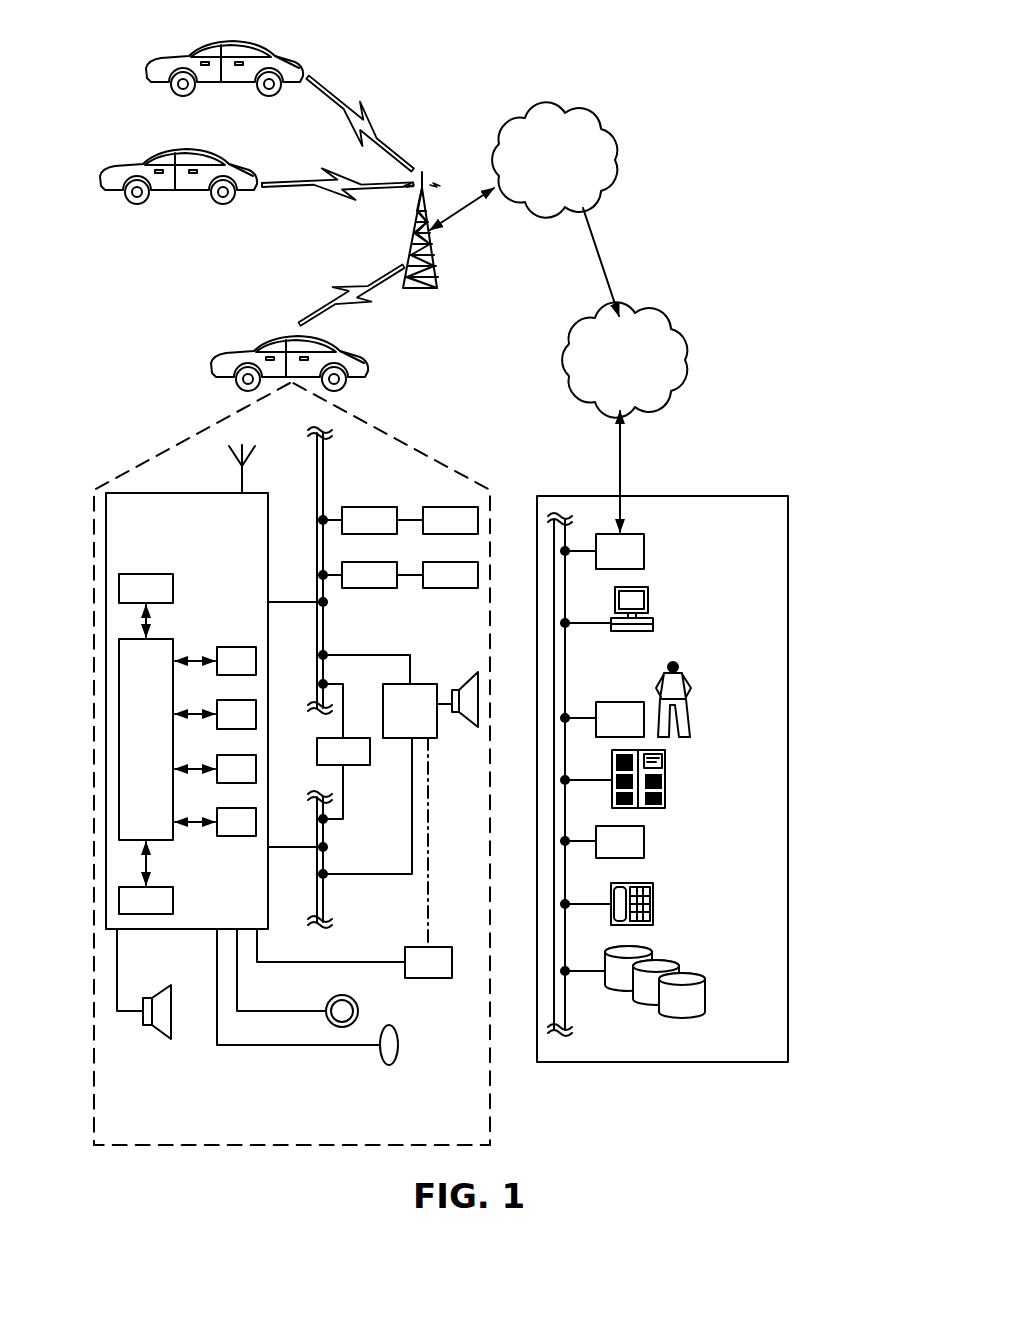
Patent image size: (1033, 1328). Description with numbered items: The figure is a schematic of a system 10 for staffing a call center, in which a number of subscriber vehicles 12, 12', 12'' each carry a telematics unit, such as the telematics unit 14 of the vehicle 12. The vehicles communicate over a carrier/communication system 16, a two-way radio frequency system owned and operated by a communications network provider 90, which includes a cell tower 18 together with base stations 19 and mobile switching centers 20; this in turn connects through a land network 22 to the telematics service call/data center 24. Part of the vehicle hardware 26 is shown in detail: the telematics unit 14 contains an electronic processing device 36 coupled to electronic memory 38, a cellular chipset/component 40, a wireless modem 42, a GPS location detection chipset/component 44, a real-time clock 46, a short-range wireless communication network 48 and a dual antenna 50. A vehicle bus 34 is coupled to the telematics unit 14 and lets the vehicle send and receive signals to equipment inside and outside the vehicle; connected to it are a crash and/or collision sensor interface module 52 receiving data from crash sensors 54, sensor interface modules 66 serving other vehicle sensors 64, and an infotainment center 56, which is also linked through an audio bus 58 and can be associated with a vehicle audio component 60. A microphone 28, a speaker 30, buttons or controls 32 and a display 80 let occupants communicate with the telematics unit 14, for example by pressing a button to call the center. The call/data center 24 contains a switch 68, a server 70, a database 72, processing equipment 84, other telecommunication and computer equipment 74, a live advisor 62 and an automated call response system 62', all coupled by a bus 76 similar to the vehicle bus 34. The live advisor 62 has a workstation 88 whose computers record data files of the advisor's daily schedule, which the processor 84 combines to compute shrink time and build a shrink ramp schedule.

The system 10 is at (690, 203).
The vehicle 12 is at (289, 341).
The vehicle 12' is at (178, 157).
The vehicle 12'' is at (224, 50).
The telematics unit 14 is at (268, 688).
The carrier/communication system 16 is at (492, 224).
The communications network provider 90 is at (543, 302).
The cell tower 18 is at (408, 238).
The base station 19 is at (554, 160).
The mobile switching center 20 is at (572, 160).
The land network 22 is at (624, 360).
The call/data center 24 is at (662, 1062).
The vehicle hardware 26 is at (278, 1145).
The microphone 28 is at (399, 1045).
The speaker 30 is at (162, 1036).
The buttons, knobs, switches, keyboards, and/or controls 32 is at (359, 1011).
The vehicle bus 34 is at (325, 642).
The electronic processing device 36 is at (146, 739).
The electronic memory 38 is at (146, 902).
The cellular chipset/component 40 is at (146, 589).
The wireless modem 42 is at (236, 662).
The location detection chipset/component 44 is at (236, 715).
The real-time clock 46 is at (236, 770).
The short-range wireless communication network 48 is at (236, 823).
The dual antenna 50 is at (242, 483).
The crash and/or collision sensor interface module 52 is at (369, 521).
The crash sensors 54 is at (450, 521).
The infotainment center 56 is at (343, 752).
The audio bus 58 is at (317, 862).
The vehicle audio component 60 is at (430, 705).
The live advisor 62 is at (698, 686).
The automated call response system 62' is at (670, 598).
The vehicle sensors 64 is at (450, 576).
The sensor interface modules 66 is at (369, 576).
The switch 68 is at (620, 551).
The server 70 is at (668, 777).
The database 72 is at (706, 1000).
The telecommunication and computer equipment 74 is at (655, 904).
The bus 76 is at (566, 998).
The display 80 is at (354, 953).
The processing equipment 84 is at (620, 719).
The workstation 88 is at (620, 842).